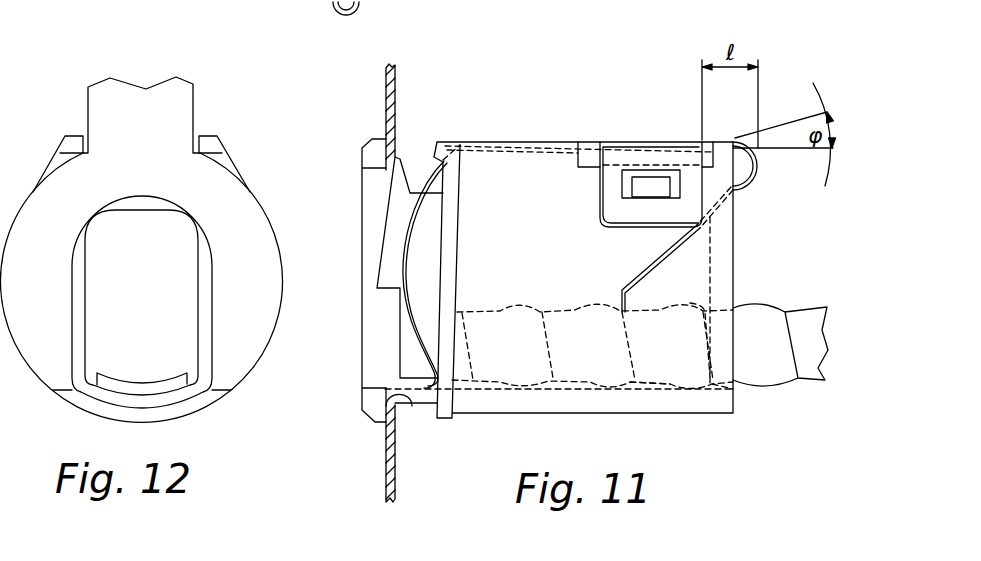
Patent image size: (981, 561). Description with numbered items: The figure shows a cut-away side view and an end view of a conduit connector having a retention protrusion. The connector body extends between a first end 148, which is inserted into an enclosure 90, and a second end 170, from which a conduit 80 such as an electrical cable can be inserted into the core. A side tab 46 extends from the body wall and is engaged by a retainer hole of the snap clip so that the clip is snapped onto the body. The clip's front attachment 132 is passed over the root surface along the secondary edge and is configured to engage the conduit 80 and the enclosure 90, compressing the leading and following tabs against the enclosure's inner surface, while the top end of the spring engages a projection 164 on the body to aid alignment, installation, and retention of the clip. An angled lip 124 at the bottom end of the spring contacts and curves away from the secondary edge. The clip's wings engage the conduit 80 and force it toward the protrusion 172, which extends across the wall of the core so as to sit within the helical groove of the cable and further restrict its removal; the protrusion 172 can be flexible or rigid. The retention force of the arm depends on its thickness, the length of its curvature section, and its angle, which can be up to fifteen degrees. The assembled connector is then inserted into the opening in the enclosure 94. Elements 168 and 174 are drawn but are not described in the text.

In FIG. 11, the side tab 46 is at (648, 187).
In FIG. 11, the conduit 80 is at (760, 302).
In FIG. 11, the enclosure 90 is at (386, 442).
In FIG. 11, the enclosure 94 is at (412, 406).
In FIG. 11, the angled lip 124 is at (333, 15).
In FIG. 11, the front attachment 132 is at (403, 221).
In FIG. 11, the first end 148 is at (362, 185).
In FIG. 11, the projection 164 is at (437, 143).
In FIG. 12, the opening 168 is at (157, 318).
In FIG. 11, the second end 170 is at (737, 237).
In FIG. 12, the protrusion 172 is at (131, 384).
In FIG. 11, the protrusion 172 is at (643, 380).
In FIG. 11, the spring end 174 is at (737, 390).